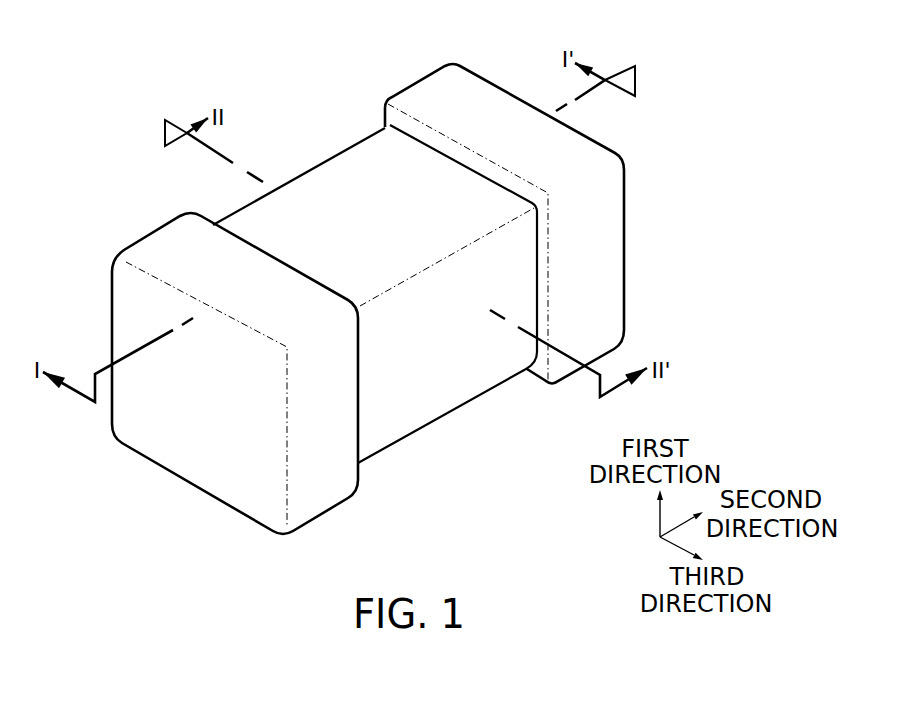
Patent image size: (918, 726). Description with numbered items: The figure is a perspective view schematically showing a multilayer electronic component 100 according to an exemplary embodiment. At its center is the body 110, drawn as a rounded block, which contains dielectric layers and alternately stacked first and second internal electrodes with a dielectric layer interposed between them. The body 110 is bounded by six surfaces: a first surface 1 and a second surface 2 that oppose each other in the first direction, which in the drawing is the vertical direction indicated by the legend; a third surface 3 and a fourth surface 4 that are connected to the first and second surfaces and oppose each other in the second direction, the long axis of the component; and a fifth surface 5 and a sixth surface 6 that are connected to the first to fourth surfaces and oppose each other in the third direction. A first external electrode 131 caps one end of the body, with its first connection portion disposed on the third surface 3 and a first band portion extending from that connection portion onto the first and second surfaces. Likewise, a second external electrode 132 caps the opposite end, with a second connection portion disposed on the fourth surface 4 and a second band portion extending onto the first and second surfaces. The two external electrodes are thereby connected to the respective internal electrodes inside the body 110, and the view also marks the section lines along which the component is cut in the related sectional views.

The multilayer electronic component 100 is at (113, 35).
The body 110 is at (250, 227).
The first external electrode 131 is at (160, 247).
The second external electrode 132 is at (432, 98).
The first surface 1 is at (367, 151).
The second surface 2 is at (394, 425).
The third surface 3 is at (188, 449).
The fourth surface 4 is at (590, 233).
The fifth surface 5 is at (343, 190).
The sixth surface 6 is at (448, 392).